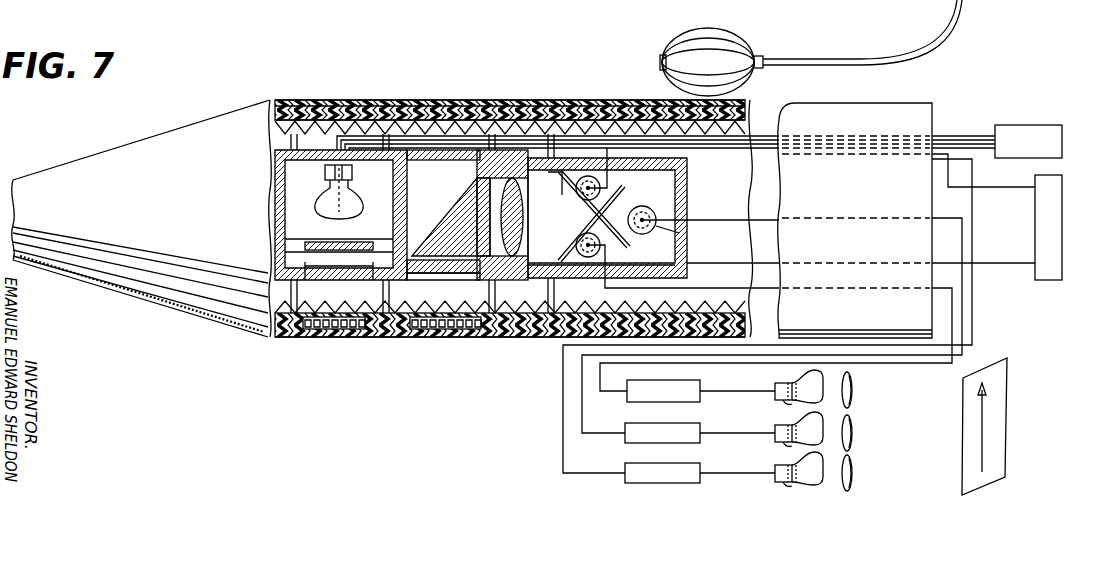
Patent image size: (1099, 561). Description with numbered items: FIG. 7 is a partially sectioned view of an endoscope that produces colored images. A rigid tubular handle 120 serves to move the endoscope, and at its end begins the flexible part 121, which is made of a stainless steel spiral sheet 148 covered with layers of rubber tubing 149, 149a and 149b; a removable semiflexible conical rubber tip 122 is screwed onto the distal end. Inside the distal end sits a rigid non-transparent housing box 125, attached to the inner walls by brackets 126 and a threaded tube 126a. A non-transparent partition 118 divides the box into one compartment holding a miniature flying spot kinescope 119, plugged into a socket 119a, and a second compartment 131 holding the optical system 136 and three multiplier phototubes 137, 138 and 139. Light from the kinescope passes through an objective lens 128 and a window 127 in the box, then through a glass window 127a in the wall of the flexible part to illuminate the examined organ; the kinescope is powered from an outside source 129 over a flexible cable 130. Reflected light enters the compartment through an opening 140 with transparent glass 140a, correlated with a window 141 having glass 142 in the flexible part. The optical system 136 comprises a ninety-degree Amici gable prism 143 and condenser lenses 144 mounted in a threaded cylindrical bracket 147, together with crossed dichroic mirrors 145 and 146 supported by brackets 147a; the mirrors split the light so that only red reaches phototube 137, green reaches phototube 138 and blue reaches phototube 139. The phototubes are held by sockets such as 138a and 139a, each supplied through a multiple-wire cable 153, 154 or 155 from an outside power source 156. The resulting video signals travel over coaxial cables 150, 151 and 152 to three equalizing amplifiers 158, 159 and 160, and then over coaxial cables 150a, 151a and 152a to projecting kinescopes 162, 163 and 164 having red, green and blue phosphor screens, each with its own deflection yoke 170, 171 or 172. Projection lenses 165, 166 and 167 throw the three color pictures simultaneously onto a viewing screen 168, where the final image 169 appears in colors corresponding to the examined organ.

The non-transparent partition 118 is at (407, 227).
The flying spot kinescope 119 is at (357, 203).
The socket 119a is at (352, 176).
The handle 120 is at (880, 103).
The flexible part 121 is at (580, 100).
The semiflexible tip 122 is at (203, 113).
The housing box 125 is at (470, 148).
The brackets 126 is at (292, 140).
The threaded tube 126a is at (265, 160).
The window 127 is at (340, 280).
The glass window 127a is at (340, 330).
The objective lens 128 is at (337, 241).
The source of electrical power 129 is at (1034, 126).
The flexible electrical cable 130 is at (372, 138).
The compartment 131 is at (570, 176).
The optical system 136 is at (477, 278).
The phototube 137 is at (600, 187).
The phototube 138 is at (644, 218).
The socket 138a is at (679, 236).
The phototube 139 is at (602, 247).
The socket 139a is at (590, 268).
The opening 140 is at (427, 273).
The transparent glass 140a is at (408, 279).
The window 141 is at (433, 333).
The transparent glass 142 is at (417, 328).
The gable prism of Amici 143 is at (465, 212).
The condenser lenses 144 is at (524, 216).
The dichroic mirror 145 is at (602, 209).
The dichroic mirror 146 is at (580, 213).
The cylindrical bracket 147 is at (560, 178).
The brackets 147a is at (478, 172).
The stainless steel spiral sheet 148 is at (420, 120).
The rubber tubing layer 149 is at (363, 138).
The rubber tubing layer 149a is at (352, 105).
The rubber tubing layer 149b is at (330, 102).
The flexible coaxial cable 150 is at (972, 202).
The coaxial cable 150a is at (737, 390).
The flexible coaxial cable 151 is at (963, 291).
The coaxial cable 151a is at (718, 433).
The flexible coaxial cable 152 is at (953, 328).
The coaxial cable 152a is at (728, 473).
The multiple wire flexible cable 153 is at (810, 153).
The multiple wire flexible cable 154 is at (808, 217).
The multiple wire flexible cable 155 is at (814, 262).
The source of electrical power 156 is at (1049, 180).
The amplifier 158 is at (688, 384).
The amplifier 159 is at (699, 426).
The amplifier 160 is at (698, 470).
The projecting kinescope 162 is at (827, 383).
The projecting kinescope 163 is at (823, 430).
The projecting kinescope 164 is at (827, 468).
The projection lens 165 is at (852, 392).
The projection lens 166 is at (853, 436).
The projection lens 167 is at (852, 478).
The viewing screen 168 is at (998, 412).
The final image 169 is at (987, 402).
The deflection yoke 170 is at (793, 403).
The deflection yoke 171 is at (795, 441).
The deflection yoke 172 is at (790, 483).